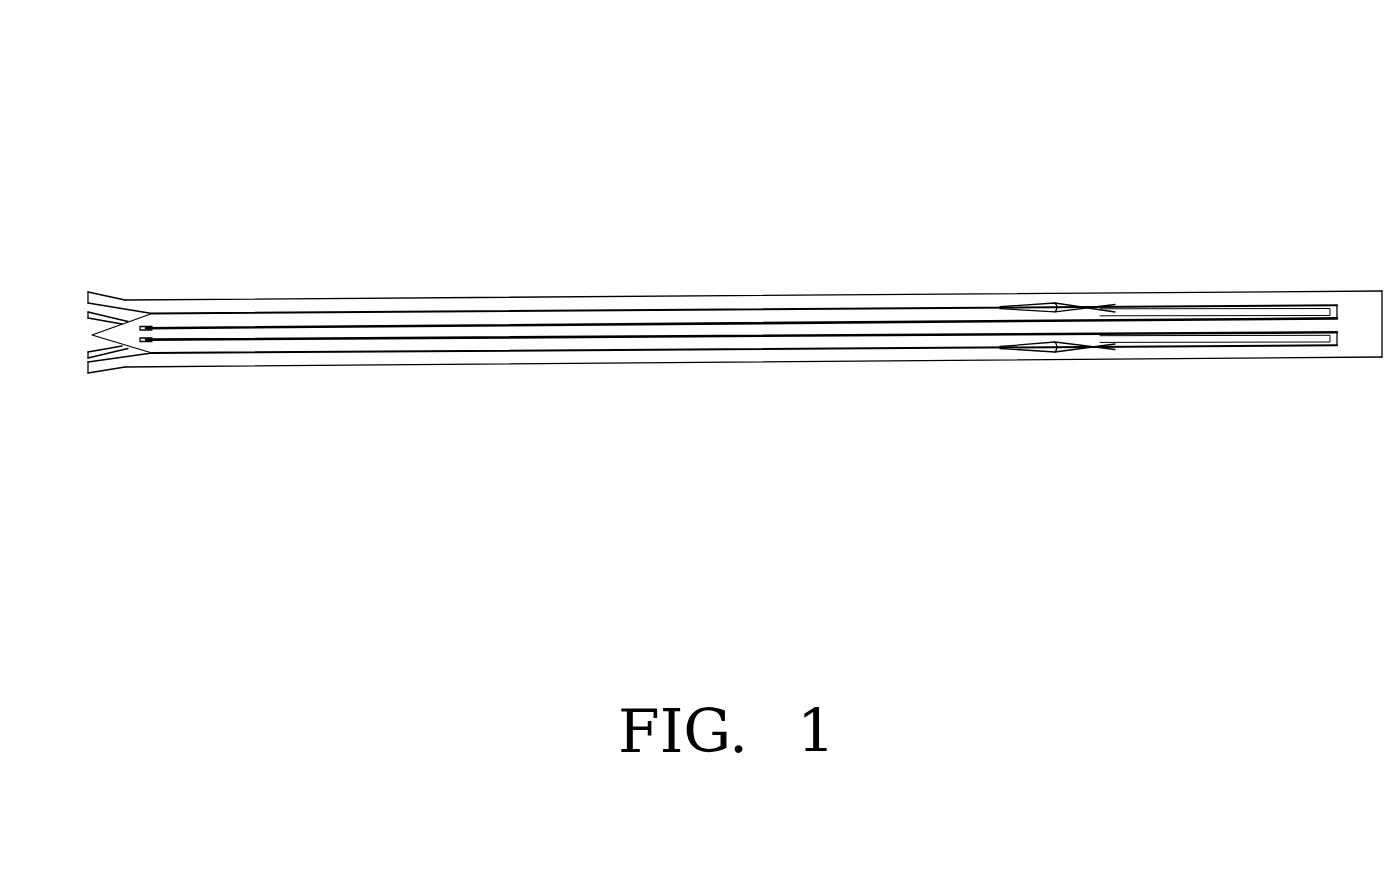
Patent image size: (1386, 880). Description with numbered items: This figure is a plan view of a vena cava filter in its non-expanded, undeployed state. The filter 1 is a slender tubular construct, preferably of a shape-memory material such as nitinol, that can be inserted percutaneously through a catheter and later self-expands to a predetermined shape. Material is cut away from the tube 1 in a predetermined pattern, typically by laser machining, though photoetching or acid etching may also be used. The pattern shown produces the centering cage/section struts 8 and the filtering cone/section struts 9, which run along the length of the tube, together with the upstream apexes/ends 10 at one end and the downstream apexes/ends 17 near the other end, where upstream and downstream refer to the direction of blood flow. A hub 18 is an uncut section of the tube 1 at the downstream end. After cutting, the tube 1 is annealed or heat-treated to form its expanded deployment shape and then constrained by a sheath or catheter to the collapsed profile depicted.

The filter 1 is at (753, 259).
The centering cage/section struts 8 is at (545, 317).
The filtering cone/section struts 9 is at (623, 330).
The upstream apexes/ends 10 is at (120, 300).
The downstream apexes/ends 17 is at (1085, 348).
The hub 18 is at (1350, 255).